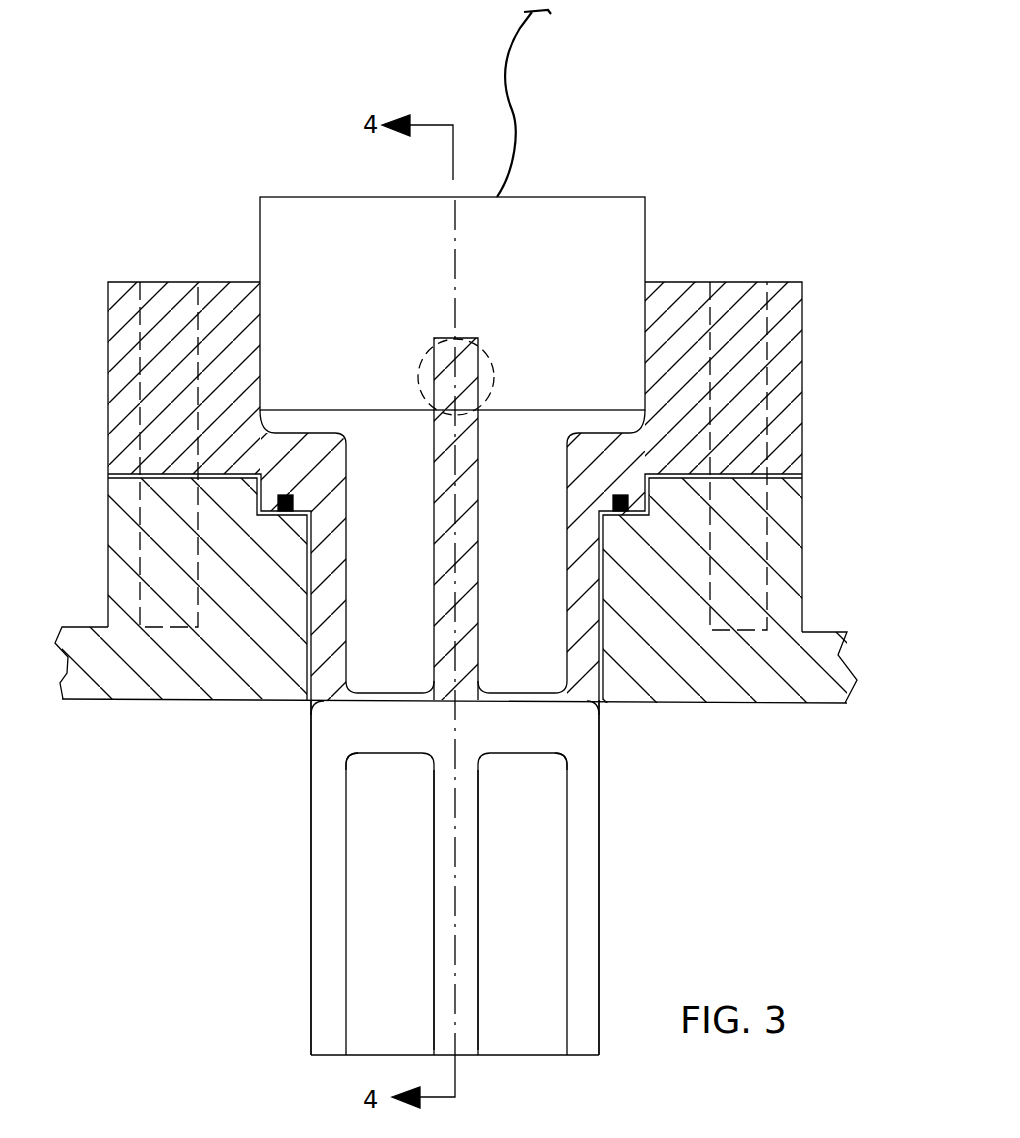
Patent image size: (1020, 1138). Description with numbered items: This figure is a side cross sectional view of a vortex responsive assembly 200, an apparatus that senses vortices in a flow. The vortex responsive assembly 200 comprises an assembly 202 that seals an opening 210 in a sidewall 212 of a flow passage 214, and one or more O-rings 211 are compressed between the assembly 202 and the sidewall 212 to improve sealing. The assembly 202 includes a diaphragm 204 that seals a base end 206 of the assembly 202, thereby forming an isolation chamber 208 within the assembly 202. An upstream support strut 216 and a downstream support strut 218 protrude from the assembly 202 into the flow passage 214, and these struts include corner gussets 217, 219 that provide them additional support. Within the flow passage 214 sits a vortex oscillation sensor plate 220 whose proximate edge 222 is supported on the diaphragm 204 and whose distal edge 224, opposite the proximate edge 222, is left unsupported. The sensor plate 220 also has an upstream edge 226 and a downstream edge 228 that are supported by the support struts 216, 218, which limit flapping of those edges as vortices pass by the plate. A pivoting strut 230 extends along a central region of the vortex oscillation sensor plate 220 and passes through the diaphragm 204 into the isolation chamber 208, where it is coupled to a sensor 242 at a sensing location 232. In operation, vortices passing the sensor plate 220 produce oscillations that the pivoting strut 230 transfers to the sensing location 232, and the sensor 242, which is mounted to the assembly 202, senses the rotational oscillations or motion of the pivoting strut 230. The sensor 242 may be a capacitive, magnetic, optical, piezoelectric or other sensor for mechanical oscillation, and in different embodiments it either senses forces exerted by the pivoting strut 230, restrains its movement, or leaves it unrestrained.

The vortex responsive assembly 200 is at (711, 94).
The assembly 202 is at (222, 414).
The diaphragm 204 is at (387, 692).
The base end 206 is at (470, 702).
The isolation chamber 208 is at (411, 563).
The opening 210 is at (307, 603).
The O-rings 211 is at (628, 496).
The sidewall 212 is at (138, 703).
The flow passage 214 is at (178, 858).
The upstream support strut 216 is at (311, 994).
The corner gusset 217 is at (346, 754).
The downstream support strut 218 is at (602, 978).
The corner gusset 219 is at (567, 756).
The vortex oscillation sensor plate 220 is at (412, 974).
The proximate edge 222 is at (388, 755).
The distal edge 224 is at (386, 1053).
The upstream edge 226 is at (349, 886).
The downstream edge 228 is at (567, 886).
The pivoting strut 230 is at (478, 504).
The sensing location 232 is at (497, 358).
The sensor 242 is at (355, 263).